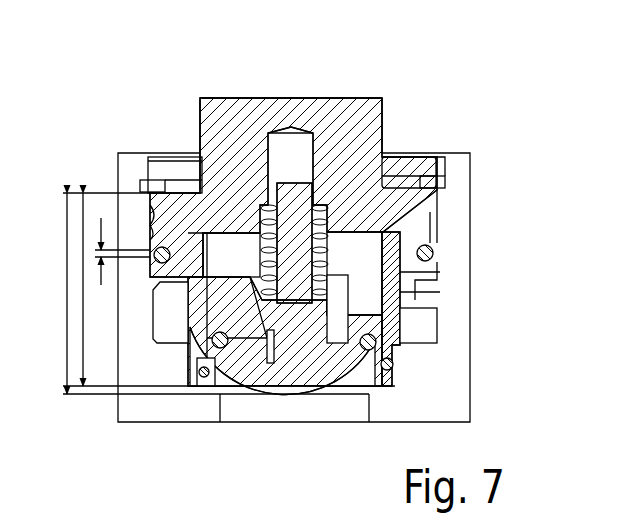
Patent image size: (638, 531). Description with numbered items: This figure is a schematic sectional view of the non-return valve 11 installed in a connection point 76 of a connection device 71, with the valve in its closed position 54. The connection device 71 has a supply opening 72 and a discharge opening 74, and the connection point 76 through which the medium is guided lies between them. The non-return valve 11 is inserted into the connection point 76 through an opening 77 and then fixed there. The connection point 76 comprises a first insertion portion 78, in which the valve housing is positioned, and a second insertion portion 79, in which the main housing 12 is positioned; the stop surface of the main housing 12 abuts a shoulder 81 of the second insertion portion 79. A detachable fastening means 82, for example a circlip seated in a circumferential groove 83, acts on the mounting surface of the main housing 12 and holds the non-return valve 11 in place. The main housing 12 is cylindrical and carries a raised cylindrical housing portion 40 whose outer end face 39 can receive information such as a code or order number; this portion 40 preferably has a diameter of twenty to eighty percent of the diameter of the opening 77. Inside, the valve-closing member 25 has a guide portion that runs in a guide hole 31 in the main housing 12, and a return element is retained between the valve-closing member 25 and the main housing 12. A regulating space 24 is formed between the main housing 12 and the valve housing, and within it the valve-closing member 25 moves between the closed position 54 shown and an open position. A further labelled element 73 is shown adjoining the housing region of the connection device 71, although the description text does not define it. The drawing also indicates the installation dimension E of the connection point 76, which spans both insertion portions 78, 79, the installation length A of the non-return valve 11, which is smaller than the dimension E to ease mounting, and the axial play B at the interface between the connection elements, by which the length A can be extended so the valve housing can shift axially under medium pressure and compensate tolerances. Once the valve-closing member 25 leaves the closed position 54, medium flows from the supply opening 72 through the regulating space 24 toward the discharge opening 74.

The non-return valve 11 is at (383, 57).
The main housing 12 is at (402, 120).
The regulating space 24 is at (362, 275).
The valve-closing member 25 is at (292, 352).
The guide hole 31 is at (283, 100).
The outer end face 39 is at (330, 86).
The cylindrical housing portion 40 is at (200, 125).
The closed position 54 is at (238, 383).
The connection device 71 is at (125, 128).
The supply opening 72 is at (350, 410).
The seal 73 is at (120, 155).
The discharge opening 74 is at (437, 308).
The connection point 76 is at (162, 145).
The opening 77 is at (422, 182).
The first insertion portion 78 is at (410, 370).
The second insertion portion 79 is at (445, 231).
The shoulder 81 is at (423, 277).
The detachable fastening means 82 is at (440, 172).
The circumferential groove 83 is at (446, 186).
The installation length A is at (88, 300).
The axial play B is at (99, 249).
The installation dimension E is at (67, 323).